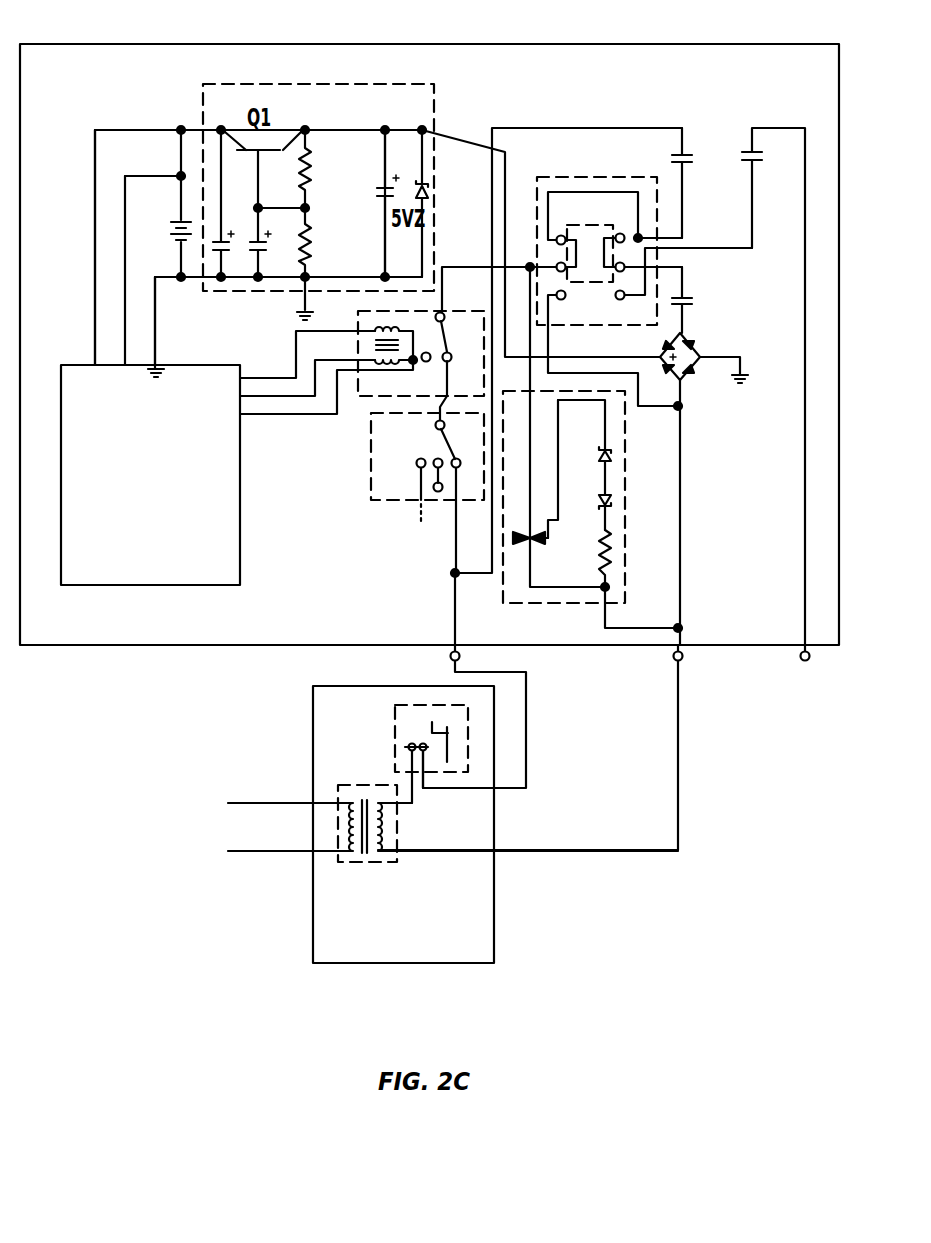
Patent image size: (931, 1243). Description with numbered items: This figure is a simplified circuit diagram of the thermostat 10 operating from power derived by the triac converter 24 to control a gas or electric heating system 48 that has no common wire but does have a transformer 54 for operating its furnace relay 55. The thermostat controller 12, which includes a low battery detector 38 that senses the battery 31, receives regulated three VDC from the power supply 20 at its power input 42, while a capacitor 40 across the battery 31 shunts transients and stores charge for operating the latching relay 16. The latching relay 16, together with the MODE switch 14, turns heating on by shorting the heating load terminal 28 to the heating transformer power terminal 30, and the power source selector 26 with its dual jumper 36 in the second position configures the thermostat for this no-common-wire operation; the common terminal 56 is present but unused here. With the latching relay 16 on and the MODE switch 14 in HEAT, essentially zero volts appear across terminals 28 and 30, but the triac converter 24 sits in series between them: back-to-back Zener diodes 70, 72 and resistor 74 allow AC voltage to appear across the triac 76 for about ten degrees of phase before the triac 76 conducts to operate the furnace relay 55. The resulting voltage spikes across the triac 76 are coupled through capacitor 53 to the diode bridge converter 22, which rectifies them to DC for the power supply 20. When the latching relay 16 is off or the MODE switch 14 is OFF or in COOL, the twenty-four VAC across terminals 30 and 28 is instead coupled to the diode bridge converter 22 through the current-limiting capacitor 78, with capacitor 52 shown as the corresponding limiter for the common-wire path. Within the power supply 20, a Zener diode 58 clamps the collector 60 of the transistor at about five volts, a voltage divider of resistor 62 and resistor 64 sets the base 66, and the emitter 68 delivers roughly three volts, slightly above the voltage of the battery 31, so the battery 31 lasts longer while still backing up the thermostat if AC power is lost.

The thermostat 10 is at (632, 44).
The thermostat controller 12 is at (243, 467).
The MODE switch 14 is at (395, 502).
The latching relay 16 is at (447, 309).
The power supply 20 is at (434, 88).
The diode bridge converter 22 is at (705, 345).
The triac converter 24 is at (625, 503).
The power source selector 26 is at (553, 178).
The heating load terminal 28 is at (451, 656).
The heating transformer power terminal 30 is at (683, 658).
The battery 31 is at (175, 223).
The dual jumper 36 is at (590, 226).
The low battery detector 38 is at (124, 365).
The capacitor 40 is at (238, 246).
The 3 VDC power input 42 is at (93, 362).
The heating system 48 is at (359, 686).
The capacitor 52 is at (749, 152).
The capacitor 53 is at (686, 298).
The transformer 54 is at (363, 785).
The furnace relay 55 is at (393, 730).
The common terminal 56 is at (809, 660).
The Zener diode 58 is at (428, 186).
The collector 60 is at (300, 128).
The resistor 62 is at (302, 180).
The resistor 64 is at (310, 238).
The base 66 is at (256, 180).
The emitter 68 is at (236, 128).
The Zener diode 70 is at (609, 458).
The Zener diode 72 is at (611, 502).
The resistor 74 is at (612, 548).
The triac 76 is at (536, 548).
The capacitor 78 is at (676, 150).